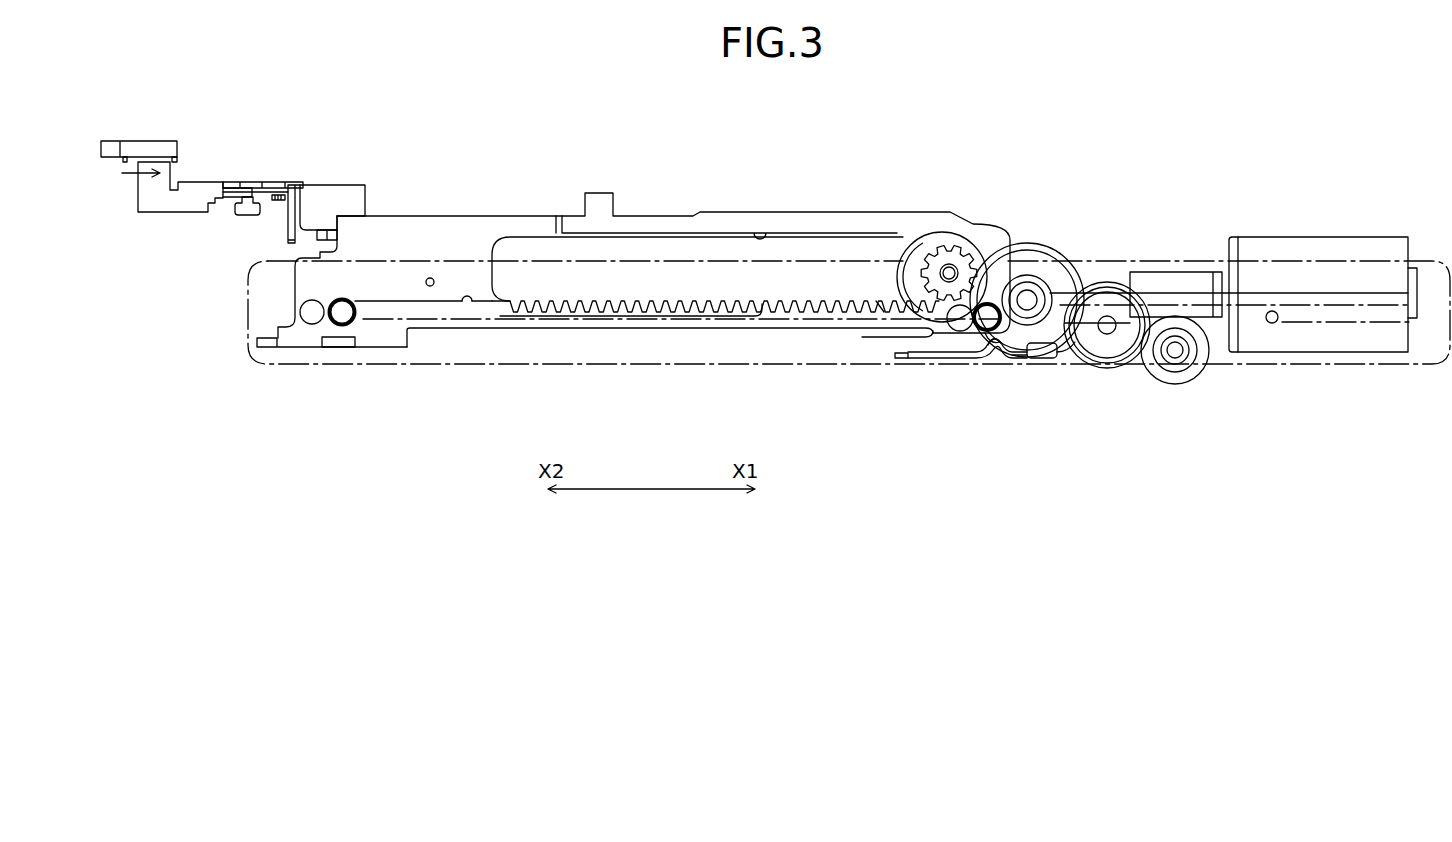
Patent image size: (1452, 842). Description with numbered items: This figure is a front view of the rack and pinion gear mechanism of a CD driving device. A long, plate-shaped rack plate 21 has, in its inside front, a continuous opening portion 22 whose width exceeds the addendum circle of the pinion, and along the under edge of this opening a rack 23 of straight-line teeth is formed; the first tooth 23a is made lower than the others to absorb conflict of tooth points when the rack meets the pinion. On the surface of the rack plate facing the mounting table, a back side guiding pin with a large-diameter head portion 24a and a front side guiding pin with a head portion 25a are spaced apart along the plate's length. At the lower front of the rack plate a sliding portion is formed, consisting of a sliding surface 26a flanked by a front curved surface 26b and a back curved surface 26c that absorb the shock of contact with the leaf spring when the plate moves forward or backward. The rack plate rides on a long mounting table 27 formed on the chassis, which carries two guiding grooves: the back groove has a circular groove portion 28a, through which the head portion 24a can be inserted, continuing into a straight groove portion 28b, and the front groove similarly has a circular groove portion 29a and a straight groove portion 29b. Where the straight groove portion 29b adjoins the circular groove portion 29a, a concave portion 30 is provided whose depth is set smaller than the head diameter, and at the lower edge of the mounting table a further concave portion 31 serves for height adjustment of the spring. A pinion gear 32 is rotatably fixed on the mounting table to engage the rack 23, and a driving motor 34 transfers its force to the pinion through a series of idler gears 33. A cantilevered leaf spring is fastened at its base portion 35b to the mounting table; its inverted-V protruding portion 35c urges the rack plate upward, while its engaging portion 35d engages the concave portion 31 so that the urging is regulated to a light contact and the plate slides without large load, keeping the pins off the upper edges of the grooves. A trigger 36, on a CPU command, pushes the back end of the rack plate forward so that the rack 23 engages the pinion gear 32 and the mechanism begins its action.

The rack plate 21 is at (446, 224).
The opening portion 22 is at (762, 236).
The rack 23 is at (830, 296).
The first tooth 23a is at (938, 262).
The head portion 24a is at (342, 318).
The head portion 25a is at (987, 320).
The sliding surface 26a is at (908, 345).
The front curved surface 26b is at (1005, 350).
The back curved surface 26c is at (883, 298).
The mounting table 27 is at (435, 352).
The circular groove portion 28a is at (312, 318).
The straight groove portion 28b is at (468, 303).
The circular groove portion 29a is at (960, 325).
The straight groove portion 29b is at (1274, 324).
The concave portion 30 is at (1020, 352).
The concave portion 31 is at (1040, 352).
The pinion gear 32 is at (966, 248).
The idler gears 33 is at (1033, 252).
The driving motor 34 is at (1314, 245).
The base portion 35b is at (910, 358).
The protruding portion 35c is at (993, 346).
The engaging portion 35d is at (1057, 351).
The trigger 36 is at (334, 192).